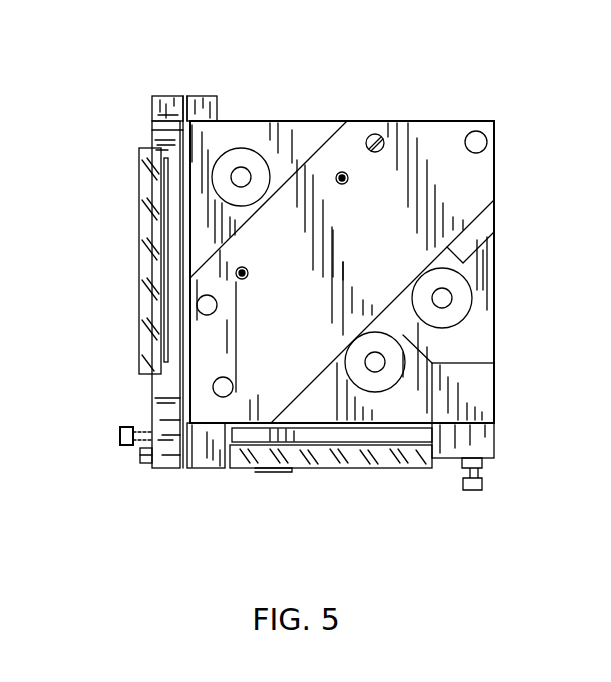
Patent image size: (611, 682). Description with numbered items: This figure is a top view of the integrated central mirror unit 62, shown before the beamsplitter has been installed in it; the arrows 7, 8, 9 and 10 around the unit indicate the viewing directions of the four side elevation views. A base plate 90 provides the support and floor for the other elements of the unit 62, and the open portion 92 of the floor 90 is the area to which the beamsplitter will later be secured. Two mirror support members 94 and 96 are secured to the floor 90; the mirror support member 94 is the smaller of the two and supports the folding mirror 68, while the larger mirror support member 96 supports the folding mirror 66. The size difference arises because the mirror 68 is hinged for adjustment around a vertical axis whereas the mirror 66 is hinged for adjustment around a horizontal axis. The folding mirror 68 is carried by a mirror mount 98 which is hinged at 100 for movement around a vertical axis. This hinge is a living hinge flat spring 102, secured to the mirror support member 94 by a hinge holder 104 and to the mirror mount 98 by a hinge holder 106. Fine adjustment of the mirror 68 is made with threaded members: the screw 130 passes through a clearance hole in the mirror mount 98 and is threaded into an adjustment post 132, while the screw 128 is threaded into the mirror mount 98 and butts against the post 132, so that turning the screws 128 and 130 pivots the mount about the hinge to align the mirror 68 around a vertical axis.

The integrated central mirror unit 62 is at (508, 156).
The folding mirror 66 is at (370, 466).
The folding mirror 68 is at (145, 190).
The base plate 90 is at (422, 119).
The open portion 92 is at (458, 187).
The mirror support member 94 is at (248, 125).
The mirror support member 96 is at (470, 345).
The mirror mount 98 is at (152, 133).
The hinge 100 is at (185, 116).
The living hinge flat spring 102 is at (160, 130).
The hinge holder 104 is at (208, 95).
The hinge holder 106 is at (165, 97).
The screw 128 is at (120, 435).
The screw 130 is at (140, 458).
The adjustment post 132 is at (205, 470).
The arrow 7 is at (323, 97).
The arrow 8 is at (123, 295).
The arrow 9 is at (323, 487).
The arrow 10 is at (508, 298).